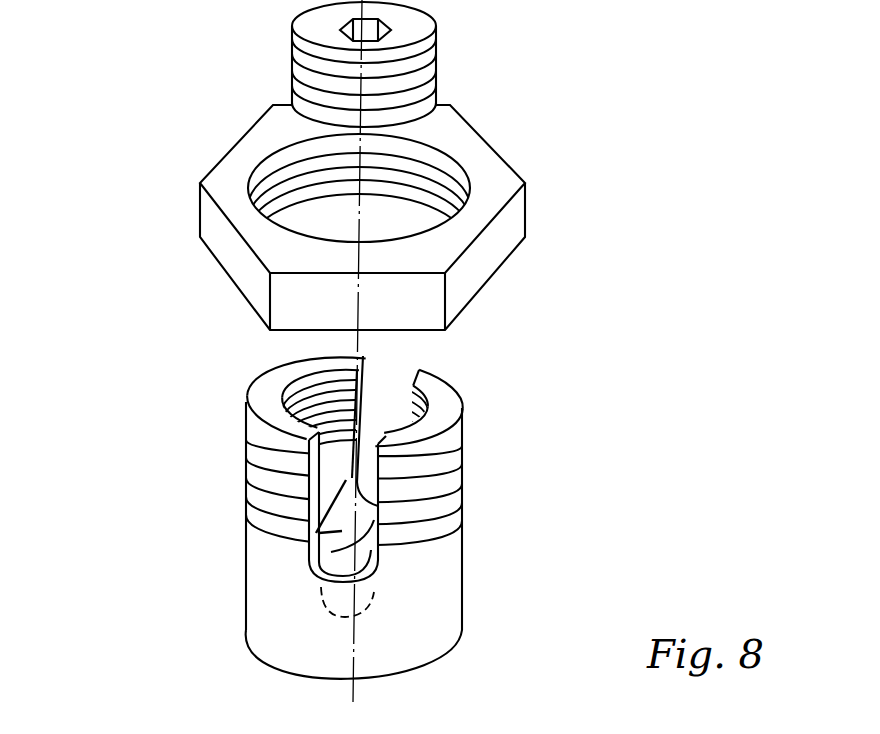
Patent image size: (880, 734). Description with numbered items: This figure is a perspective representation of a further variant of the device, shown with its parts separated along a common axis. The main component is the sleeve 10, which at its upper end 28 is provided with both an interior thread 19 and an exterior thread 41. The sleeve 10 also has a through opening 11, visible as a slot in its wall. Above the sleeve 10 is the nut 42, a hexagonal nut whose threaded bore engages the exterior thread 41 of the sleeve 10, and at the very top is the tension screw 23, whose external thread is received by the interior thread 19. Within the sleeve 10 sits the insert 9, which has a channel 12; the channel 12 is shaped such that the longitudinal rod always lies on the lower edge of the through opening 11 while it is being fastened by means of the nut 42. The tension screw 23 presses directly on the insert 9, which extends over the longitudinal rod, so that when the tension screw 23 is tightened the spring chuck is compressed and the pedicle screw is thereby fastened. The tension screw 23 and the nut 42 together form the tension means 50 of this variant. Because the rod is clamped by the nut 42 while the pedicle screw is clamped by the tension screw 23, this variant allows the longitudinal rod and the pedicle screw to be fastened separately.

The tension means 50 is at (371, 340).
The tension screw 23 is at (418, 34).
The nut 42 is at (492, 170).
The interior thread 19 is at (308, 400).
The exterior thread 41 is at (260, 442).
The upper end 28 is at (447, 420).
The insert 9 is at (330, 498).
The sleeve 10 is at (388, 493).
The through opening 11 is at (340, 533).
The channel 12 is at (338, 593).